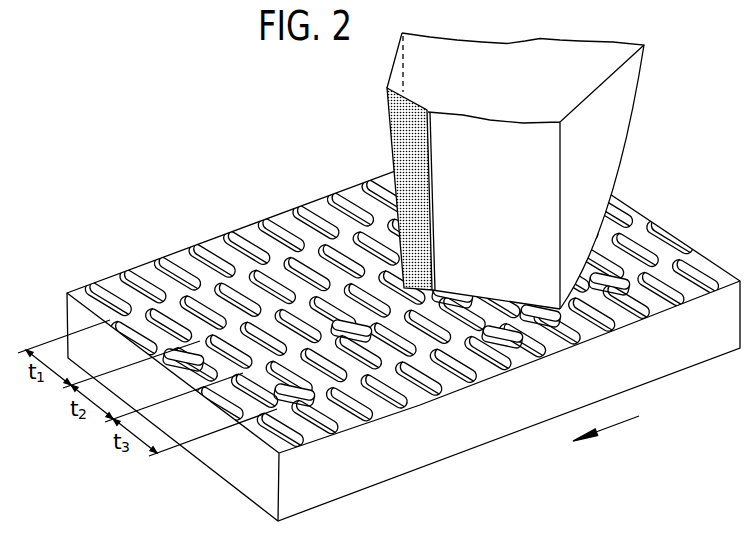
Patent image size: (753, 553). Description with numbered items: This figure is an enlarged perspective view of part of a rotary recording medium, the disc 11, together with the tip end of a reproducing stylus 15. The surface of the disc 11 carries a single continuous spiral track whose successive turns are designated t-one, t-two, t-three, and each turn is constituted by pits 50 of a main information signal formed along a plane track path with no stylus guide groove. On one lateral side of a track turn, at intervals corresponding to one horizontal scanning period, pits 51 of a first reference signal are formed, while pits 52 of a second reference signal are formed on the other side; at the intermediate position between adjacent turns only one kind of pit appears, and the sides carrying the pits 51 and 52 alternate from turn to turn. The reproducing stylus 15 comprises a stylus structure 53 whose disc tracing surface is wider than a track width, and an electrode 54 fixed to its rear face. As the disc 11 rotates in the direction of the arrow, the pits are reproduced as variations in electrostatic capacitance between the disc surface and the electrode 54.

The disc 11 is at (146, 256).
The reproducing stylus 15 is at (386, 74).
The pits 50 is at (238, 241).
The pits of first reference signal 51 is at (300, 253).
The pits of second reference signal 52 is at (168, 360).
The stylus structure 53 is at (617, 132).
The electrode 54 is at (391, 134).